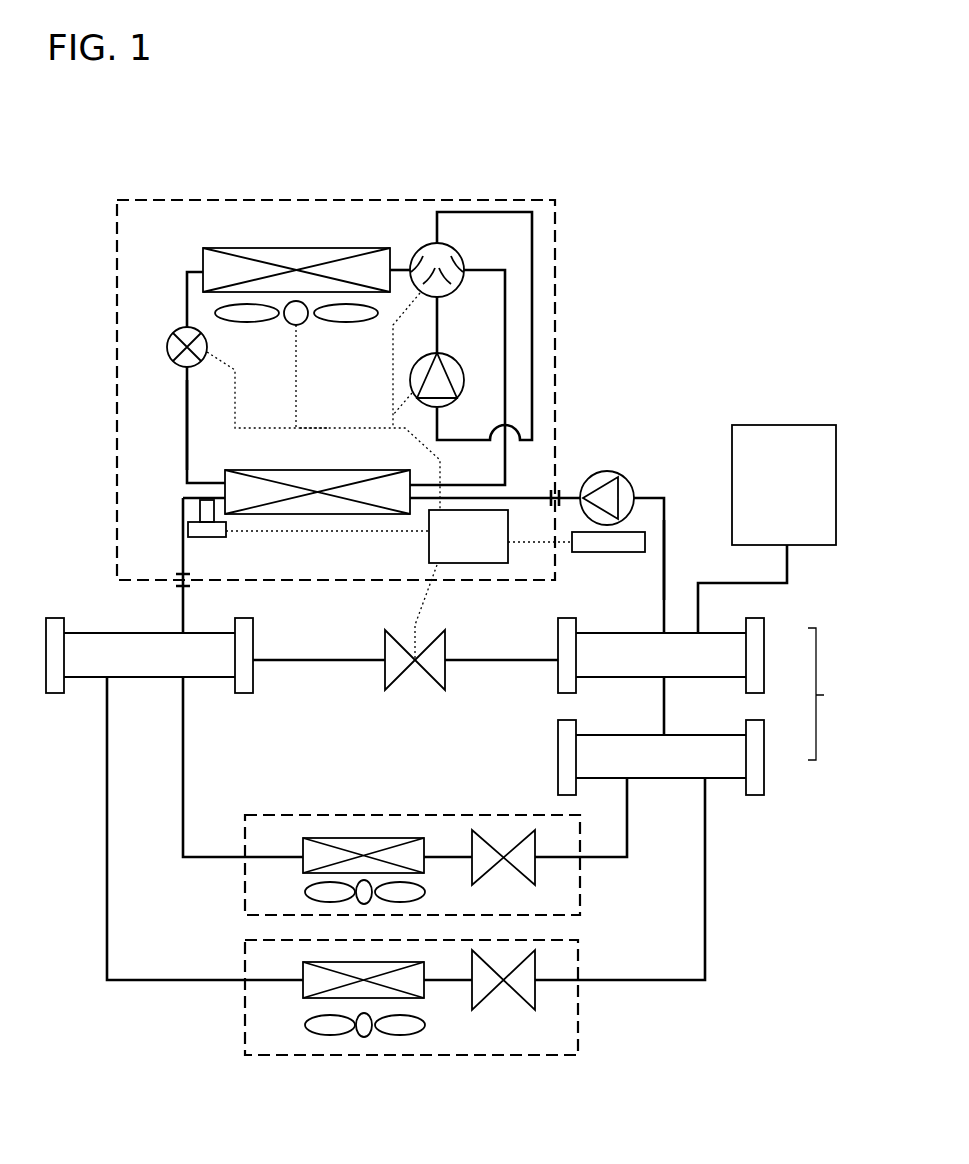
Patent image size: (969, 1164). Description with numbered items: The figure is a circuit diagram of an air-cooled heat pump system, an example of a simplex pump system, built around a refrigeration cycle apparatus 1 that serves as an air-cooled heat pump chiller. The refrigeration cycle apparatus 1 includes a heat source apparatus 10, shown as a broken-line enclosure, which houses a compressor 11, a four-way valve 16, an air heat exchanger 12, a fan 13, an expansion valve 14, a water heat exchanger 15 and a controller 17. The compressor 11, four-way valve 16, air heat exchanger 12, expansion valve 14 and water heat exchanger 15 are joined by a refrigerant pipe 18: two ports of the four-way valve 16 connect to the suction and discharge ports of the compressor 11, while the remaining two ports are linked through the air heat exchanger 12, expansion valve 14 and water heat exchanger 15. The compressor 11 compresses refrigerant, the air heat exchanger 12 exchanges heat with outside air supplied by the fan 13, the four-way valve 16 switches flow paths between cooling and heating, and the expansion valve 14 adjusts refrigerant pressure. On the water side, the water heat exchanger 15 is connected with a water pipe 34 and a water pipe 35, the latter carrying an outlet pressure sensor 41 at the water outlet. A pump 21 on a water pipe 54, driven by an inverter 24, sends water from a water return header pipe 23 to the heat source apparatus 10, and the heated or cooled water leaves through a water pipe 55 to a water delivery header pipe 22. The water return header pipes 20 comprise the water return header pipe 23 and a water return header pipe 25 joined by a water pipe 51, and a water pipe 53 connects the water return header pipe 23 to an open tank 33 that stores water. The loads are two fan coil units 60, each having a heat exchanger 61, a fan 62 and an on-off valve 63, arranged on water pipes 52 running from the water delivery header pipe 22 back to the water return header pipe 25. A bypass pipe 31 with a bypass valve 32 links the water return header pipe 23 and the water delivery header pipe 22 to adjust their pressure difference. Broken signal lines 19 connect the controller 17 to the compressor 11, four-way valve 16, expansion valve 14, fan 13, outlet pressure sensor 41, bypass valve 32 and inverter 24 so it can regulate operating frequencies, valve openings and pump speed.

The refrigeration cycle apparatus 1 is at (578, 228).
The heat source apparatus 10 is at (556, 282).
The compressor 11 is at (444, 368).
The air heat exchanger 12 is at (220, 248).
The fan 13 is at (335, 322).
The expansion valve 14 is at (167, 340).
The water heat exchanger 15 is at (278, 472).
The four-way valve 16 is at (412, 252).
The controller 17 is at (429, 546).
The refrigerant pipe 18 is at (184, 426).
The signal lines 19 is at (319, 433).
The water return header pipes 20 is at (829, 694).
The pump 21 is at (600, 470).
The water delivery header pipe 22 is at (204, 680).
The water return header pipe 23 is at (766, 652).
The inverter 24 is at (598, 554).
The water return header pipe 25 is at (766, 754).
The bypass pipe 31 is at (336, 666).
The bypass valve 32 is at (418, 676).
The tank 33 is at (763, 424).
The water pipe 34 is at (538, 494).
The water pipe 35 is at (184, 546).
The outlet pressure sensor 41 is at (206, 540).
The water pipe 51 is at (666, 712).
The water pipes 52 is at (629, 833).
The water pipe 53 is at (789, 562).
The water pipe 54 is at (666, 504).
The water pipe 55 is at (182, 620).
The fan coil unit 60 is at (582, 896).
The heat exchanger 61 is at (302, 998).
The fan 62 is at (304, 1036).
The on-off valve 63 is at (518, 1008).